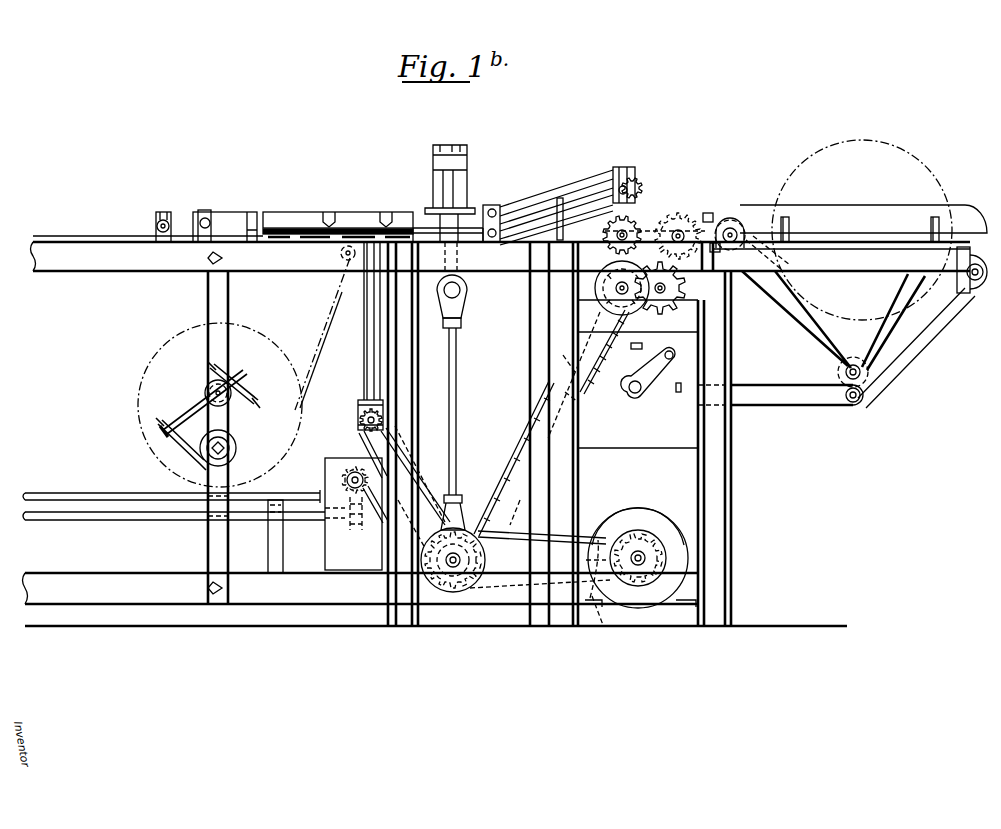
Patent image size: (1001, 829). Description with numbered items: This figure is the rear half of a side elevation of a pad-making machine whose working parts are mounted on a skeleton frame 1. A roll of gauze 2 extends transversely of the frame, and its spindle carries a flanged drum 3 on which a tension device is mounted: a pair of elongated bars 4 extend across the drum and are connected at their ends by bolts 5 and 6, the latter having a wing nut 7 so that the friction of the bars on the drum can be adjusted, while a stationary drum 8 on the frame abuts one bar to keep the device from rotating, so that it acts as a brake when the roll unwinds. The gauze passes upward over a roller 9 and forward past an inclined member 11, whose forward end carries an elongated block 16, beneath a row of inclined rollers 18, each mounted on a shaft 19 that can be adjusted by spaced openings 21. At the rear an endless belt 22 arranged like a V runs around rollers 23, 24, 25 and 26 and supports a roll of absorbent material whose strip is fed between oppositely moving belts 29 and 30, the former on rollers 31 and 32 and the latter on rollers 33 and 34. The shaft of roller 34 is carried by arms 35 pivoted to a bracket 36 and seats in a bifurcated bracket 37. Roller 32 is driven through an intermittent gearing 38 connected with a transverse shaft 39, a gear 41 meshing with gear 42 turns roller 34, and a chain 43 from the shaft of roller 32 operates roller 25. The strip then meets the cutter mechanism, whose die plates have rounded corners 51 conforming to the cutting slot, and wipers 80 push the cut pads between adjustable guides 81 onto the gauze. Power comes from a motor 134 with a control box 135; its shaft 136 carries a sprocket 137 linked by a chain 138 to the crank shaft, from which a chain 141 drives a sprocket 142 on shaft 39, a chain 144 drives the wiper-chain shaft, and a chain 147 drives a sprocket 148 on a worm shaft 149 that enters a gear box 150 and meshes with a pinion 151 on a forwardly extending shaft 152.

The skeleton frame 1 is at (718, 500).
The roll of gauze 2 is at (187, 368).
The flanged drum 3 is at (188, 408).
The elongated bars 4 is at (177, 450).
The bolt 5 is at (258, 366).
The bolt 6 is at (200, 455).
The wing nut 7 is at (160, 423).
The stationary drum 8 is at (207, 463).
The roller 9 is at (340, 258).
The inclined member 11 is at (362, 418).
The elongated block 16 is at (372, 345).
The rollers 18 is at (156, 226).
The shaft 19 is at (382, 422).
The spaced openings 21 is at (862, 170).
The endless belt 22 is at (937, 338).
The roller 23 is at (988, 292).
The roller 24 is at (855, 405).
The roller 25 is at (737, 212).
The roller 26 is at (867, 372).
The endless belt 29 is at (527, 213).
The endless belt 30 is at (570, 187).
The roller 31 is at (493, 242).
The roller 32 is at (667, 218).
The roller 33 is at (495, 207).
The roller 34 is at (642, 185).
The arms 35 is at (578, 197).
The bracket 36 is at (488, 205).
The bifurcated bracket 37 is at (635, 168).
The intermittent gearing 38 is at (677, 307).
The shaft 39 is at (693, 212).
The gear 41 is at (623, 170).
The gear 42 is at (647, 212).
The chain 43 is at (713, 208).
The rounded corners 51 is at (460, 343).
The wipers 80 is at (386, 214).
The adjustable guides 81 is at (228, 212).
The motor 134 is at (670, 548).
The control box 135 is at (663, 435).
The motor shaft 136 is at (638, 562).
The sprocket 137 is at (687, 577).
The chain 138 is at (533, 530).
The chain 141 is at (535, 395).
The sprocket 142 is at (597, 310).
The chain 144 is at (423, 460).
The chain 147 is at (380, 520).
The sprocket 148 is at (355, 487).
The worm shaft 149 is at (357, 463).
The gear box 150 is at (325, 470).
The pinion 151 is at (353, 535).
The shaft 152 is at (77, 513).